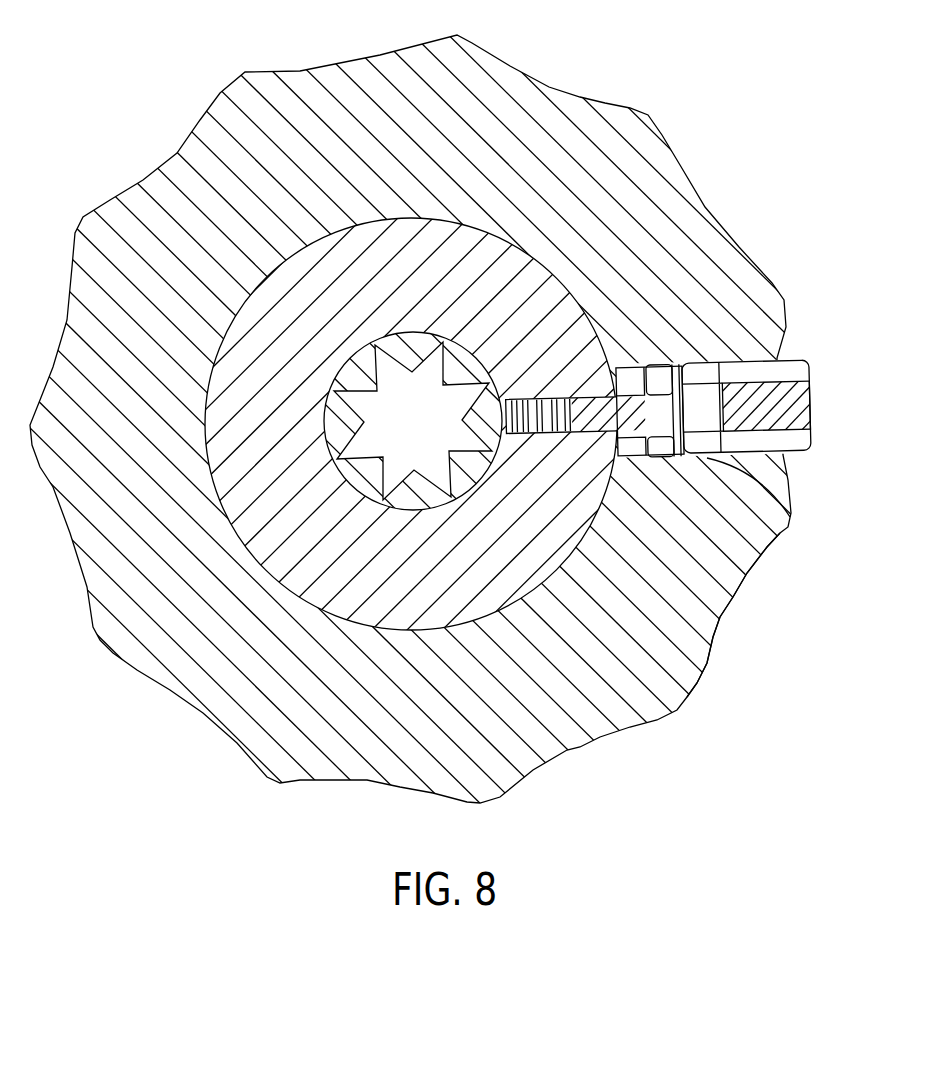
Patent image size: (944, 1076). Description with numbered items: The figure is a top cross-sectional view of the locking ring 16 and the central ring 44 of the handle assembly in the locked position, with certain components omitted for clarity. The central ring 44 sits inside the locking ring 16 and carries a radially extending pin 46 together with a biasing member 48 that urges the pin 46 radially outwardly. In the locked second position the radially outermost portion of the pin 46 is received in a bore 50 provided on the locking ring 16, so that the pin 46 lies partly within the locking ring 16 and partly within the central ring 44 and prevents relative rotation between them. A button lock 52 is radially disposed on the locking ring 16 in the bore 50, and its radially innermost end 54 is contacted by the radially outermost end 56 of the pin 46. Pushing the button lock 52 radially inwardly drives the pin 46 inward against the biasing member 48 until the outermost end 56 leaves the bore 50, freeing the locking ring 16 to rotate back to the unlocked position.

The locking ring 16 is at (524, 73).
The central ring 44 is at (257, 285).
The pin 46 is at (654, 303).
The biasing member 48 is at (712, 643).
The bore 50 is at (790, 517).
The button lock 52 is at (811, 410).
The radially innermost end 54 is at (747, 575).
The radially outermost end 56 is at (648, 368).